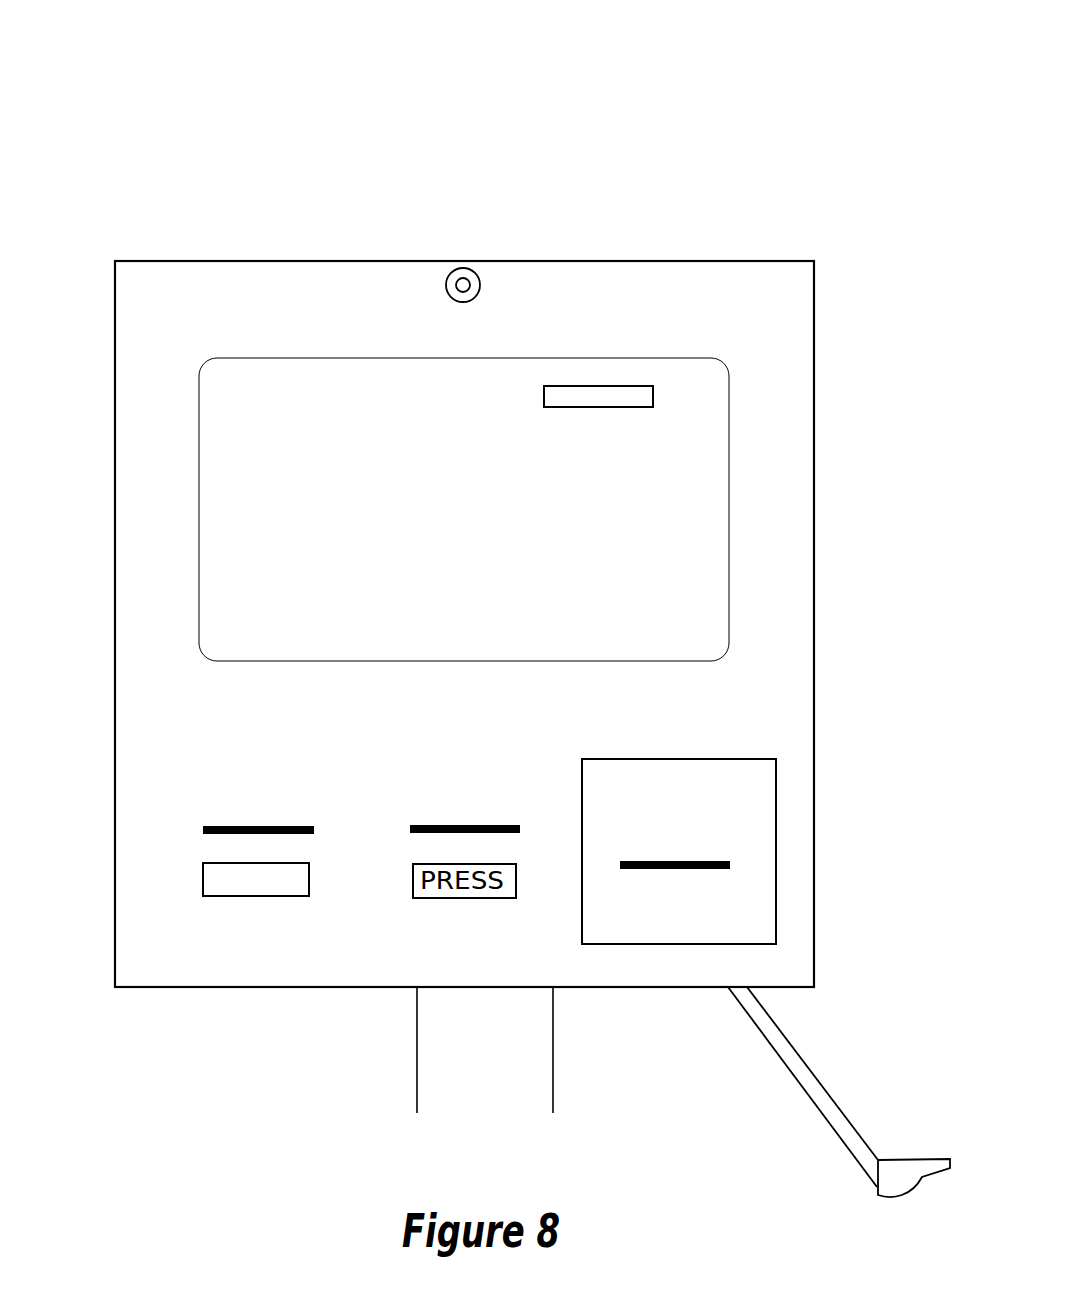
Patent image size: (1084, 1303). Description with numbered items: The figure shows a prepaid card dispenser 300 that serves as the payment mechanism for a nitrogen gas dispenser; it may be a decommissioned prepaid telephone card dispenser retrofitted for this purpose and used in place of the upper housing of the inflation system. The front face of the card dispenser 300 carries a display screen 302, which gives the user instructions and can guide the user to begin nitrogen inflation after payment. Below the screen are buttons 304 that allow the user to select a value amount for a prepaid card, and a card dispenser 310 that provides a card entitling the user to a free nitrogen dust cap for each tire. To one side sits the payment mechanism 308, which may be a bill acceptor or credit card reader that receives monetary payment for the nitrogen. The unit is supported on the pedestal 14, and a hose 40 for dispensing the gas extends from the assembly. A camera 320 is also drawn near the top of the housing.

The card dispenser 300 is at (563, 61).
The camera 320 is at (463, 268).
The display screen 302 is at (600, 386).
The card dispenser 310 is at (280, 824).
The buttons 304 is at (263, 897).
The payment mechanism 308 is at (776, 810).
The pedestal 14 is at (417, 1037).
The hose 40 is at (828, 1061).